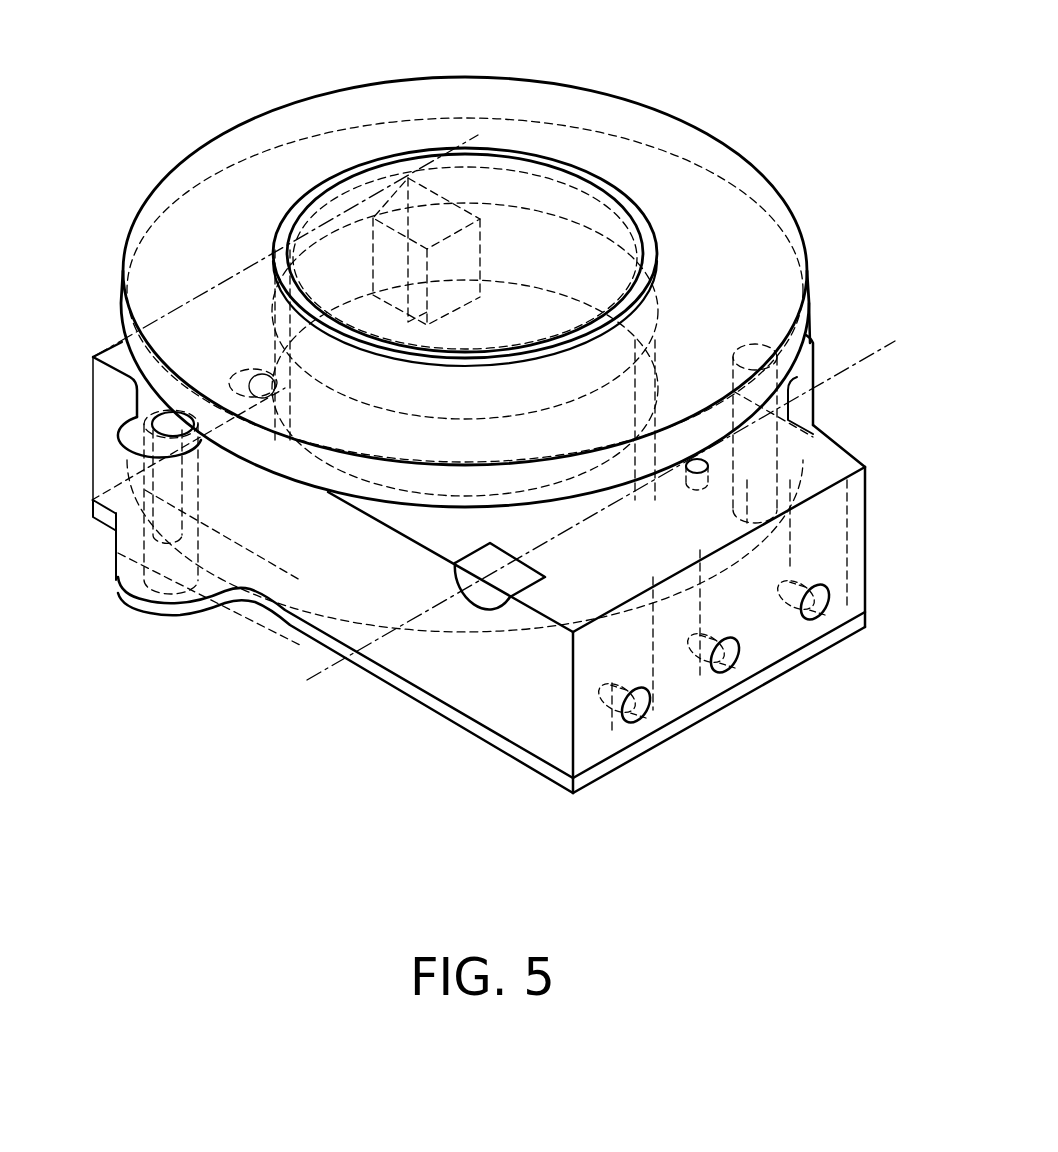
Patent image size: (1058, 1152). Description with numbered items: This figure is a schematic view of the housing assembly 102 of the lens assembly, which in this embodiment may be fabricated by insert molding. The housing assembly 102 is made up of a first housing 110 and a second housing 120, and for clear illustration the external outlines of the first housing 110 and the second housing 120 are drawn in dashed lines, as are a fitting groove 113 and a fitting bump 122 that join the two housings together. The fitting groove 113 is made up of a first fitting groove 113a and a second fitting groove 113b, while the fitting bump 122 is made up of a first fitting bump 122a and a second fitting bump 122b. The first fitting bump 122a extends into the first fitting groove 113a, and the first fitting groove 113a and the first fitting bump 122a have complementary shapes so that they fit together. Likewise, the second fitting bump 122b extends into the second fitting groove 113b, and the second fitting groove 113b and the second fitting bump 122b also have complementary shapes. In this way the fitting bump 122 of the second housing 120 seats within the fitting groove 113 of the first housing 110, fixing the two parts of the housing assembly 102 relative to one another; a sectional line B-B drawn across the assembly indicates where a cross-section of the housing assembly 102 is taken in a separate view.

The housing assembly 102 is at (153, 73).
The first housing 110 is at (117, 593).
The second housing 120 is at (277, 633).
The fitting groove 113 is at (545, 438).
The first fitting groove 113a is at (393, 190).
The second fitting groove 113b is at (705, 557).
The fitting bump 122 is at (493, 408).
The first fitting bump 122a is at (443, 210).
The second fitting bump 122b is at (643, 703).